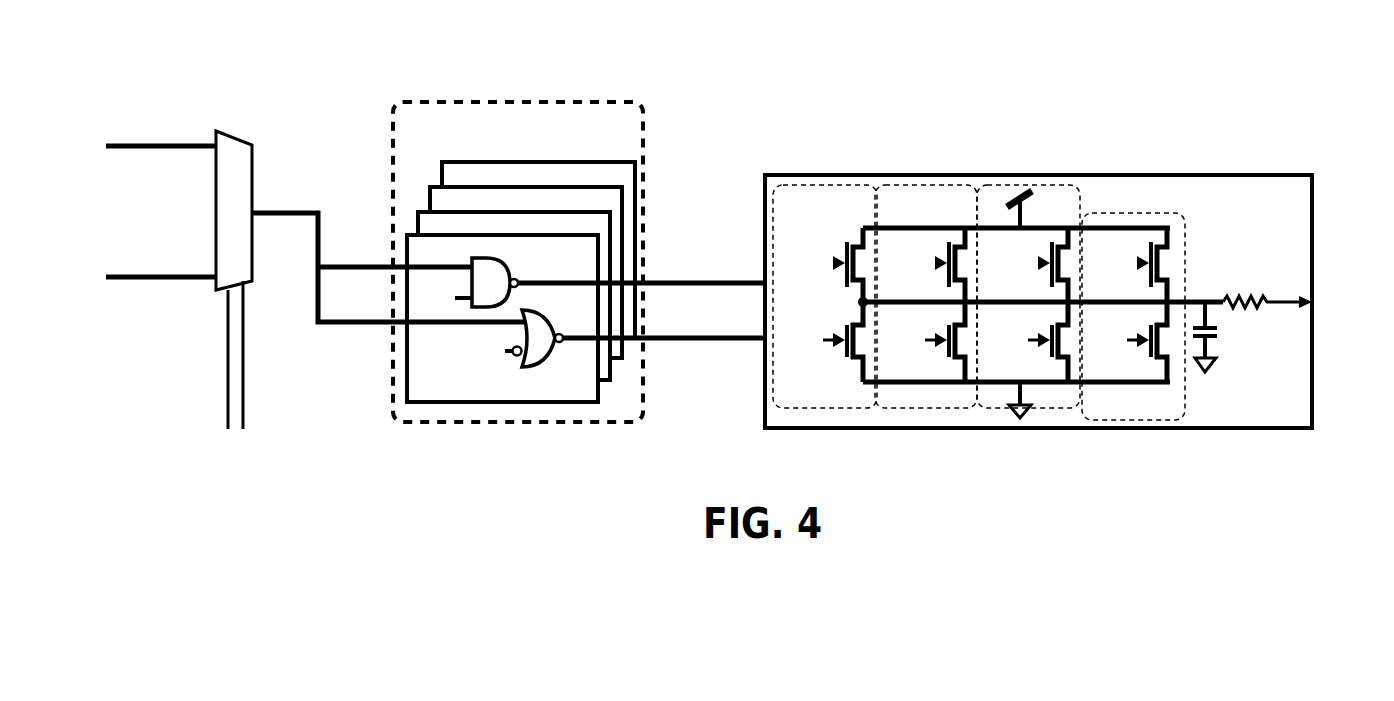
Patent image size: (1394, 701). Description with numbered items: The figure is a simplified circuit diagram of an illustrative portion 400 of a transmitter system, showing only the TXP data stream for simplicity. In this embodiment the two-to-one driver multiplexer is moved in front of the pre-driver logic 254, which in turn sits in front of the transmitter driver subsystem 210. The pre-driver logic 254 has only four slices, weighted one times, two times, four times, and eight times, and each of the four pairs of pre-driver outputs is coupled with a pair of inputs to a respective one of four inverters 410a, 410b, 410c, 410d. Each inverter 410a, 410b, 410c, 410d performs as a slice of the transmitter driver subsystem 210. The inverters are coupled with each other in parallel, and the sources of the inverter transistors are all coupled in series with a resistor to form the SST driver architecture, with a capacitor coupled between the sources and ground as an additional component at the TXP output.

The portion of a transmitter system 400 is at (231, 38).
The pre-driver logic 254 is at (579, 262).
The transmitter driver subsystem 210 is at (1074, 301).
The inverter 410a is at (1133, 316).
The inverter 410b is at (1028, 296).
The inverter 410c is at (926, 296).
The inverter 410d is at (825, 296).